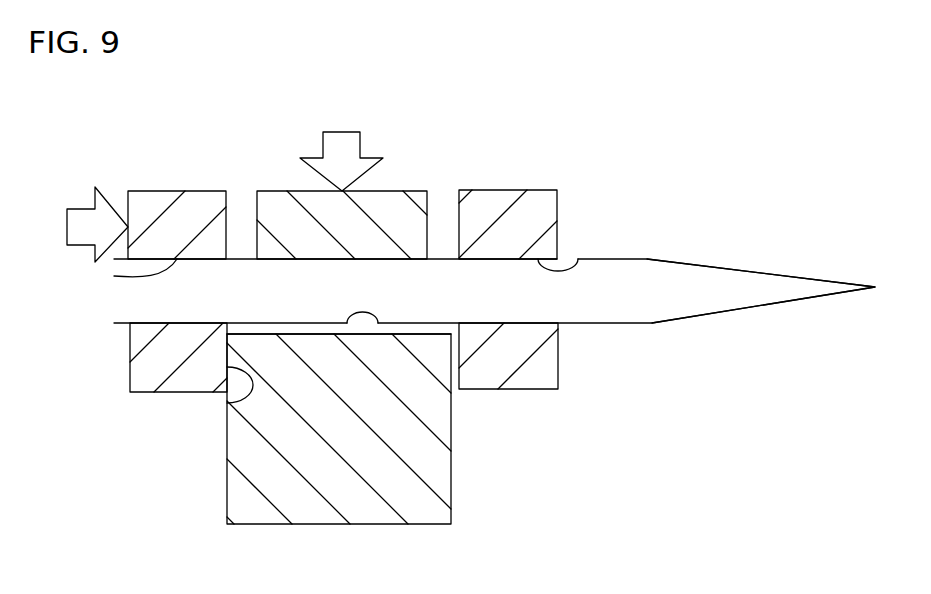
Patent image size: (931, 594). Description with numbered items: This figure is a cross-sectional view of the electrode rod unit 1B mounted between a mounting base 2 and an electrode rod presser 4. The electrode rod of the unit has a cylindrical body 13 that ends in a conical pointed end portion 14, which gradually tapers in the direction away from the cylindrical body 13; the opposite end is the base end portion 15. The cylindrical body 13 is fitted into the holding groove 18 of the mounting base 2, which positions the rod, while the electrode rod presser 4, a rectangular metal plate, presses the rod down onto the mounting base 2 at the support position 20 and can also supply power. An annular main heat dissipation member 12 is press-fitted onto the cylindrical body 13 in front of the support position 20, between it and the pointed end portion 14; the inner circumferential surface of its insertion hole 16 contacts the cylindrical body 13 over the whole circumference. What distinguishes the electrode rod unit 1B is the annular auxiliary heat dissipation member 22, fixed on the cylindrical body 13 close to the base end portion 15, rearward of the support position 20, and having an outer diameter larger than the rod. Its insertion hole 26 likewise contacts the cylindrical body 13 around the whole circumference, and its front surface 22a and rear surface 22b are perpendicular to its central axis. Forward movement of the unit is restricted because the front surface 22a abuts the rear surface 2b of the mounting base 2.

The electrode rod unit 1B is at (642, 179).
The mounting base 2 is at (227, 493).
The rear surface of the mounting base 2b is at (227, 438).
The electrode rod presser 4 is at (278, 191).
The main heat dissipation member 12 is at (512, 389).
The cylindrical body 13 is at (535, 308).
The pointed end portion 14 is at (737, 293).
The base end portion 15 is at (114, 295).
The insertion hole 16 is at (578, 255).
The holding groove 18 is at (377, 322).
The support position 20 is at (378, 240).
The auxiliary heat dissipation member 22 is at (172, 191).
The front surface of the auxiliary heat dissipation member 22a is at (241, 400).
The rear surface of the auxiliary heat dissipation member 22b is at (130, 360).
The insertion hole 26 is at (114, 276).